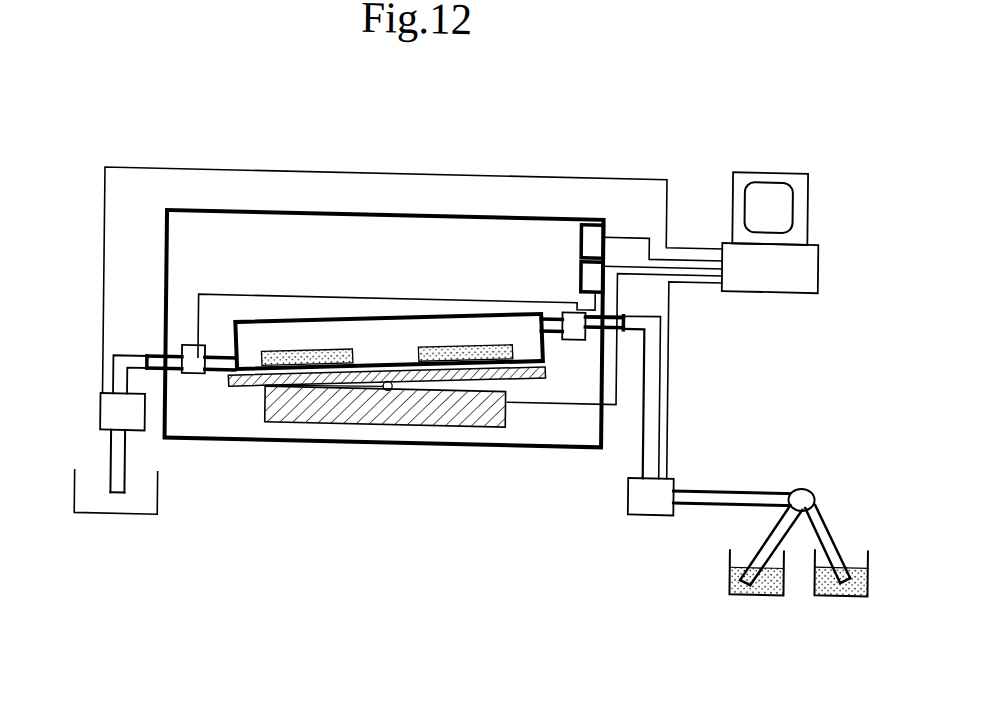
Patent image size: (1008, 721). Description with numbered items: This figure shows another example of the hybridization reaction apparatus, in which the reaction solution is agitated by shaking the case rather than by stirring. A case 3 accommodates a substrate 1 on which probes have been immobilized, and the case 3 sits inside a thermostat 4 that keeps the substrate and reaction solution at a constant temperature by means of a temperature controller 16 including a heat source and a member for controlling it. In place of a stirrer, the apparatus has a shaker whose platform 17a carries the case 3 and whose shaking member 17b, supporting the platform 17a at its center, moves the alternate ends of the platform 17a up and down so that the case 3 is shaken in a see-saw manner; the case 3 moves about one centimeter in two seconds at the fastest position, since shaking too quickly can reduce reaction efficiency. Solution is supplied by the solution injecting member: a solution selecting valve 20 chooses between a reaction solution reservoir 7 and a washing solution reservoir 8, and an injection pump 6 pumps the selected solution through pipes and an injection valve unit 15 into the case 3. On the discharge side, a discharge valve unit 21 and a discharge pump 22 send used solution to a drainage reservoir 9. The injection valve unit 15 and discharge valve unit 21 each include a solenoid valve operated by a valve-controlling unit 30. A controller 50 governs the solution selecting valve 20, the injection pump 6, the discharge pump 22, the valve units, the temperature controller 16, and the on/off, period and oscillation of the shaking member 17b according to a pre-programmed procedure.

The substrate 1 is at (284, 349).
The case 3 is at (359, 314).
The thermostat 4 is at (384, 209).
The injection pump 6 is at (639, 491).
The reaction solution reservoir 7 is at (773, 573).
The washing solution reservoir 8 is at (833, 572).
The drainage reservoir 9 is at (142, 512).
The injection valve unit 15 is at (570, 306).
The temperature controller 16 is at (596, 222).
The platform 17a is at (524, 360).
The shaking member 17b is at (338, 410).
The solution selecting valve 20 is at (800, 472).
The discharge valve unit 21 is at (185, 348).
The discharge pump 22 is at (101, 402).
The valve-controlling unit 30 is at (583, 254).
The controller 50 is at (776, 267).